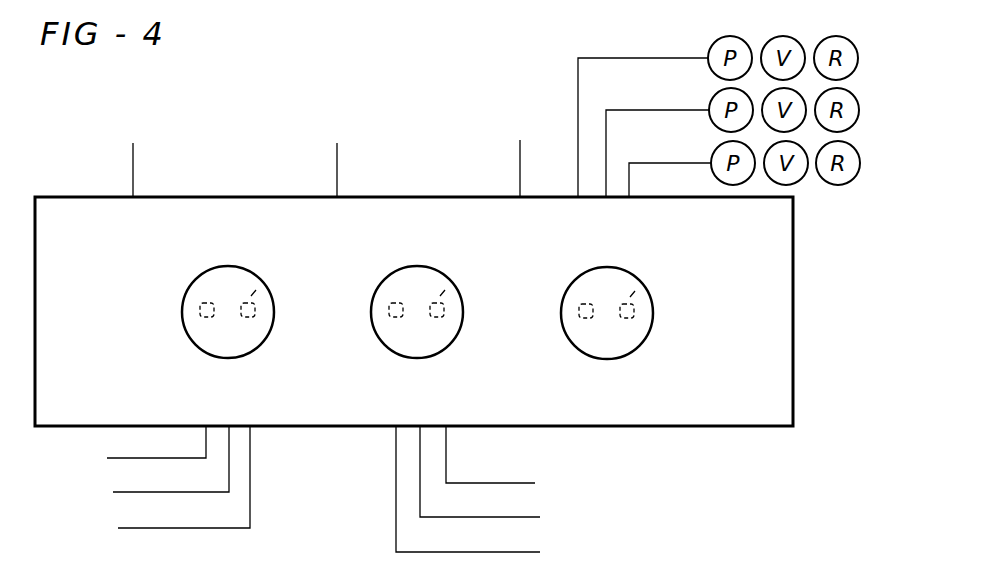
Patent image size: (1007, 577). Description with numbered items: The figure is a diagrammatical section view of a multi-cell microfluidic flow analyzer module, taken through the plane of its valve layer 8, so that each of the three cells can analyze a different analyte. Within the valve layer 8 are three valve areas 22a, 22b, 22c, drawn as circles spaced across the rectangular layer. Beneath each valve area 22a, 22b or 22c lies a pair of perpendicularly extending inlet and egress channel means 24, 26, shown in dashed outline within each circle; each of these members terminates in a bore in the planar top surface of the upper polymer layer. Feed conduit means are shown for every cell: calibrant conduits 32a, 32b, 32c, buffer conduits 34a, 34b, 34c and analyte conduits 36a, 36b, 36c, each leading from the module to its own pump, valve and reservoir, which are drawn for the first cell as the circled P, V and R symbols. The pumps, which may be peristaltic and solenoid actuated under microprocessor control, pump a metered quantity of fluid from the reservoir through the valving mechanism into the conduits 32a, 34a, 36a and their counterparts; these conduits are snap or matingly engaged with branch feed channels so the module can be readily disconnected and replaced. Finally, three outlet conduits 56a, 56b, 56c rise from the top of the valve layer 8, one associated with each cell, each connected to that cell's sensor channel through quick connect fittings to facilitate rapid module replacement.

The valve layer 8 is at (93, 216).
The valve area 22a is at (628, 338).
The valve area 22b is at (412, 278).
The valve area 22c is at (232, 275).
The inlet channel means 24 is at (262, 290).
The egress channel means 26 is at (192, 313).
The calibrant conduit 32a is at (640, 163).
The calibrant conduit 32b is at (518, 463).
The calibrant conduit 32c is at (127, 450).
The buffer conduit 34a is at (640, 110).
The buffer conduit 34b is at (507, 480).
The buffer conduit 34c is at (142, 467).
The analyte conduit 36a is at (662, 58).
The analyte conduit 36b is at (496, 497).
The analyte conduit 36c is at (157, 485).
The outlet conduit 56a is at (520, 170).
The outlet conduit 56b is at (337, 158).
The outlet conduit 56c is at (135, 164).